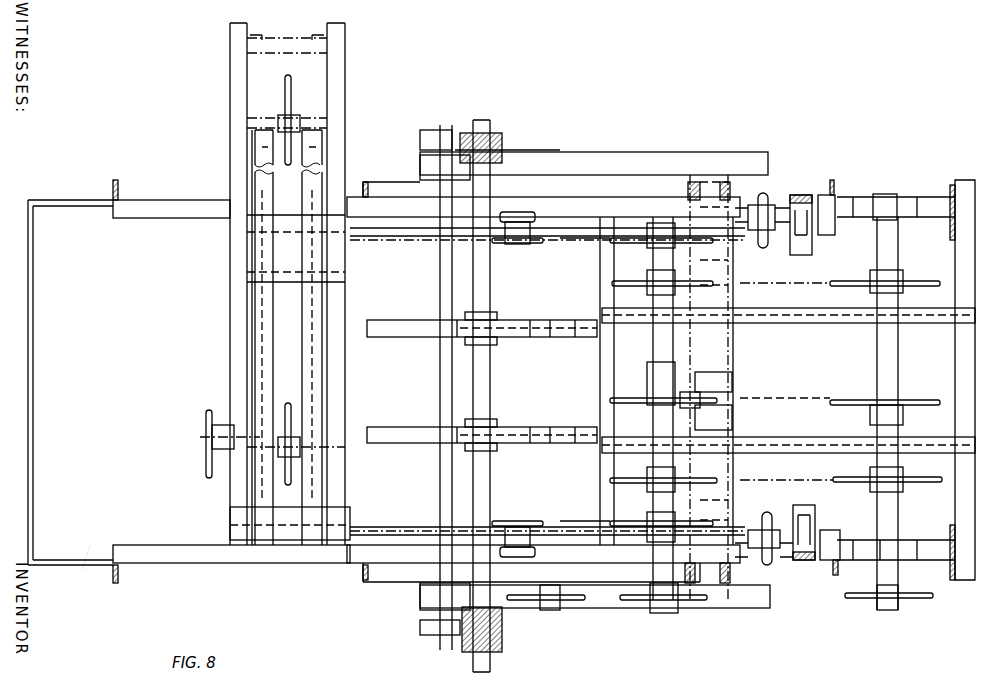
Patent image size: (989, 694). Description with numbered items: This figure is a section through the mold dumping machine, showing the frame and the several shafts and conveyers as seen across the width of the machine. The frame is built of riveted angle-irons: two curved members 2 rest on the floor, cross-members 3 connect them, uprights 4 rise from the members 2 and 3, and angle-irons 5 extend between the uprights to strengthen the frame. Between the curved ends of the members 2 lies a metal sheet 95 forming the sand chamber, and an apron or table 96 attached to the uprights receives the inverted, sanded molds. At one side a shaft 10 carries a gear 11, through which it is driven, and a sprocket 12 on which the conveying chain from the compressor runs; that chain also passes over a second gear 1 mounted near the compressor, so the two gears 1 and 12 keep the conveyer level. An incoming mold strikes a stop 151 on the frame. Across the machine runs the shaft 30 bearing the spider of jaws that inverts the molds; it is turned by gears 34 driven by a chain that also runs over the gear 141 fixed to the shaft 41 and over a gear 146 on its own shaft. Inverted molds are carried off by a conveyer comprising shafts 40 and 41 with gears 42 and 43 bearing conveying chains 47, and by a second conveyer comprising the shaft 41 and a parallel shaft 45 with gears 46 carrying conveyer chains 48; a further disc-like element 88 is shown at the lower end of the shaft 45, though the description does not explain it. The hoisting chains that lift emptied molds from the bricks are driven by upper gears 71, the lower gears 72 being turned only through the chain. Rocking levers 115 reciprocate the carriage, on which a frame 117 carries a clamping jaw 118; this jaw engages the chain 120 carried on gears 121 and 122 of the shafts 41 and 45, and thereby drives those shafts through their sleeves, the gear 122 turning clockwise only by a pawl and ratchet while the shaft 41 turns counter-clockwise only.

The gear 1 is at (290, 95).
The curved frame members 2 is at (168, 552).
The cross-members 3 is at (28, 408).
The uprights 4 is at (833, 196).
The angle-irons 5 is at (804, 318).
The shaft 10 is at (304, 448).
The gear 11 is at (206, 434).
The sprocket or gear 12 is at (292, 410).
The shaft 30 is at (490, 382).
The gears 34 is at (495, 615).
The shaft 40 is at (517, 246).
The shaft 41 is at (655, 345).
The gears 42 is at (535, 244).
The gears 43 is at (640, 243).
The shaft 45 is at (893, 352).
The gears 46 is at (706, 284).
The conveying chains 47 is at (578, 242).
The conveyer chains 48 is at (786, 377).
The gears 71 is at (765, 212).
The gears 72 is at (770, 560).
The disc 88 is at (922, 598).
The metal sheet 95 is at (92, 545).
The apron or table 96 is at (415, 332).
The rocking levers 115 is at (432, 138).
The frame 117 is at (733, 415).
The clamping jaw 118 is at (735, 390).
The chain 120 is at (805, 400).
The gear 121 is at (626, 398).
The gear 122 is at (918, 400).
The gear 141 is at (646, 602).
The gear 146 is at (566, 602).
The stop 151 is at (238, 520).